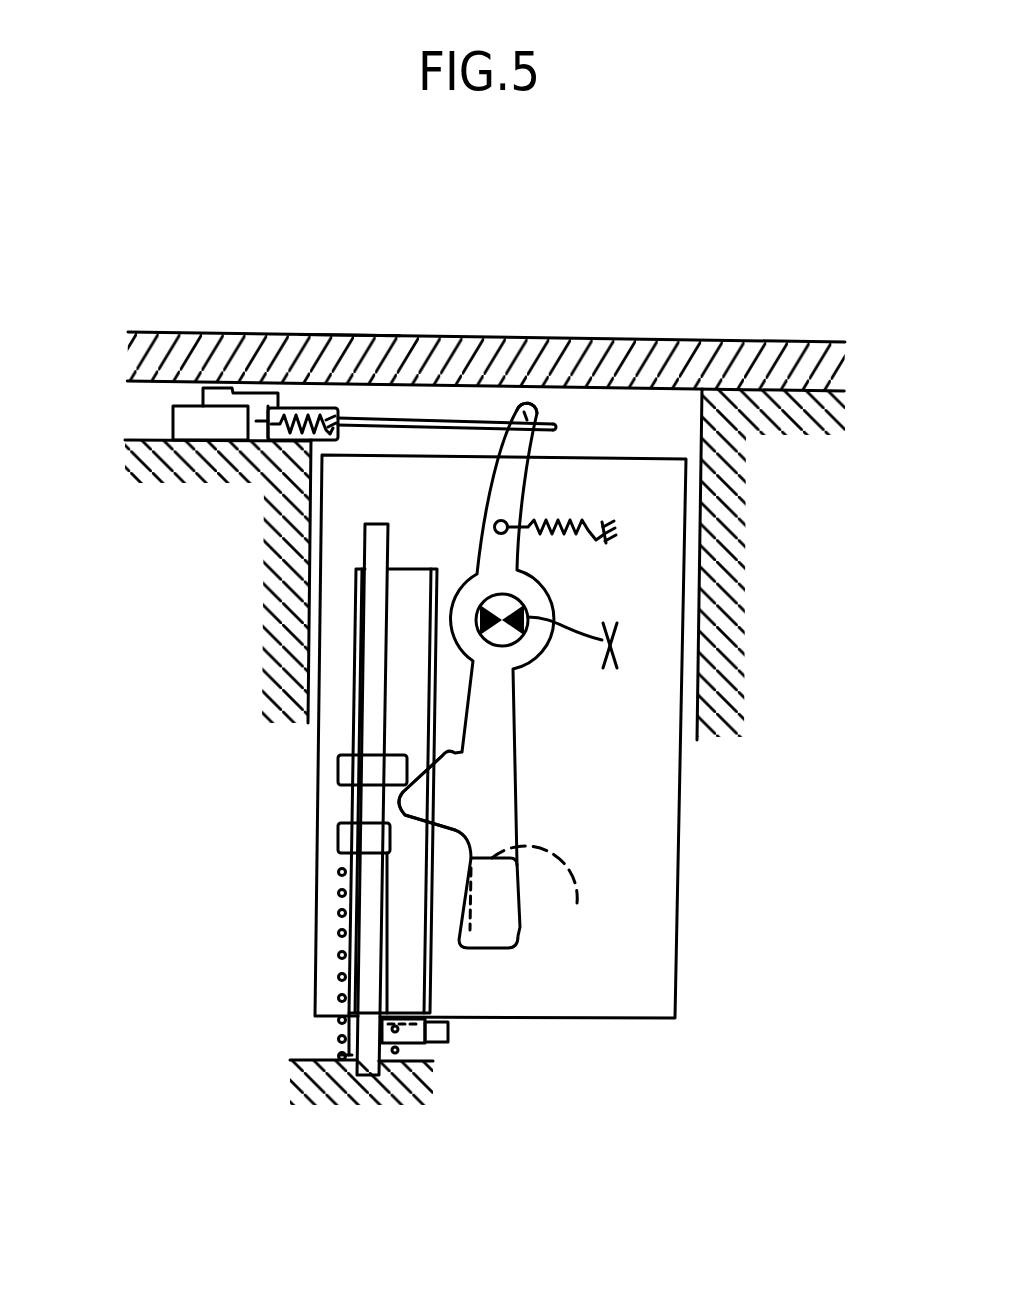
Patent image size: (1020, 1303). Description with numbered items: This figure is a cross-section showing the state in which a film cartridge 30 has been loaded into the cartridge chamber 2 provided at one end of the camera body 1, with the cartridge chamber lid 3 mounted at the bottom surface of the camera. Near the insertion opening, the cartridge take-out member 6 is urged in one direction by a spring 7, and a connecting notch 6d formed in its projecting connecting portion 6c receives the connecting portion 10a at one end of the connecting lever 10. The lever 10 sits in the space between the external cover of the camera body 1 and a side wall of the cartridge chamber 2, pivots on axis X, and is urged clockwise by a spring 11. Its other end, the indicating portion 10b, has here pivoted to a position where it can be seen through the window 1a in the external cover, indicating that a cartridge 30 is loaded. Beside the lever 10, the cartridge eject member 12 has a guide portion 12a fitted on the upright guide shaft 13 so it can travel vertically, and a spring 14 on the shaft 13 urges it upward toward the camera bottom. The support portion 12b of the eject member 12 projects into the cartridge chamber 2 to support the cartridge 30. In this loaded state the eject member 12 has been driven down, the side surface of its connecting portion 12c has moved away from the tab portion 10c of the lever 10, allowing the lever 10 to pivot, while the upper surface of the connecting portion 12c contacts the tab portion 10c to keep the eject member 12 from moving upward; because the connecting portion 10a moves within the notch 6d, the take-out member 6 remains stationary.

The camera body 1 is at (700, 427).
The window 1a is at (561, 891).
The cartridge chamber 2 is at (695, 500).
The cartridge chamber lid 3 is at (343, 334).
The cartridge take-out member 6 is at (173, 421).
The connecting portion 6c is at (557, 427).
The connecting notch 6d is at (484, 421).
The spring 7 is at (294, 408).
The connecting lever 10 is at (510, 712).
The connecting portion 10a is at (528, 402).
The indicating portion 10b is at (487, 950).
The tab portion 10c is at (438, 790).
The spring 11 is at (600, 568).
The cartridge eject member 12 is at (408, 569).
The guide portion 12a is at (338, 768).
The support portion 12b is at (448, 1040).
The connecting portion 12c is at (395, 946).
The guide shaft 13 is at (367, 540).
The spring 14 is at (335, 889).
The film cartridge 30 is at (678, 875).